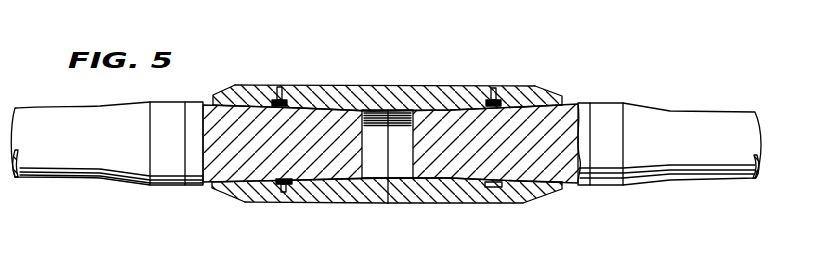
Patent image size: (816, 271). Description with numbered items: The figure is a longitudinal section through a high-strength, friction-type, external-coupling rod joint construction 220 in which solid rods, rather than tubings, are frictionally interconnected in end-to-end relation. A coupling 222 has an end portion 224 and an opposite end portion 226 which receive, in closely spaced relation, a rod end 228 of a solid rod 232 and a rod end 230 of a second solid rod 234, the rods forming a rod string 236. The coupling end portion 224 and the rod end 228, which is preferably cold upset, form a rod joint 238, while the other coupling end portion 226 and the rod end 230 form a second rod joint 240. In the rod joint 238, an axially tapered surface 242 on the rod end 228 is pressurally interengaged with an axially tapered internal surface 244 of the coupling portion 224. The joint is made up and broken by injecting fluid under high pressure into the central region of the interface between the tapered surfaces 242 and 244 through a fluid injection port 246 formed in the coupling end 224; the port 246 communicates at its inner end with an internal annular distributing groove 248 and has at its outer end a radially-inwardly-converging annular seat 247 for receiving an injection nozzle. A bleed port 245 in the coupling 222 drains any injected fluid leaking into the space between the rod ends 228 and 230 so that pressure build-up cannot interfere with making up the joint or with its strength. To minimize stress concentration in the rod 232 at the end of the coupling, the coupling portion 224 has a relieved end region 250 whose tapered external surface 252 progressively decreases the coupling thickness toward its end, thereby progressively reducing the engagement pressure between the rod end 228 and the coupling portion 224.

The rod joint construction 220 is at (415, 80).
The coupling 222 is at (440, 86).
The end portion of coupling 224 is at (258, 85).
The end portion of coupling 226 is at (515, 88).
The rod end 228 is at (330, 178).
The rod end 230 is at (458, 178).
The solid rod 232 is at (92, 182).
The solid rod 234 is at (670, 117).
The rod string 236 is at (628, 95).
The rod joint 238 is at (322, 80).
The rod joint 240 is at (512, 207).
The axially tapered surface 242 is at (362, 113).
The axially tapered internal surface 244 is at (332, 113).
The bleed port 245 is at (388, 182).
The fluid injection port 246 is at (277, 95).
The annular seat 247 is at (313, 85).
The internal annular distributing groove 248 is at (294, 187).
The relieved end region 250 is at (230, 97).
The tapered external surface 252 is at (220, 195).